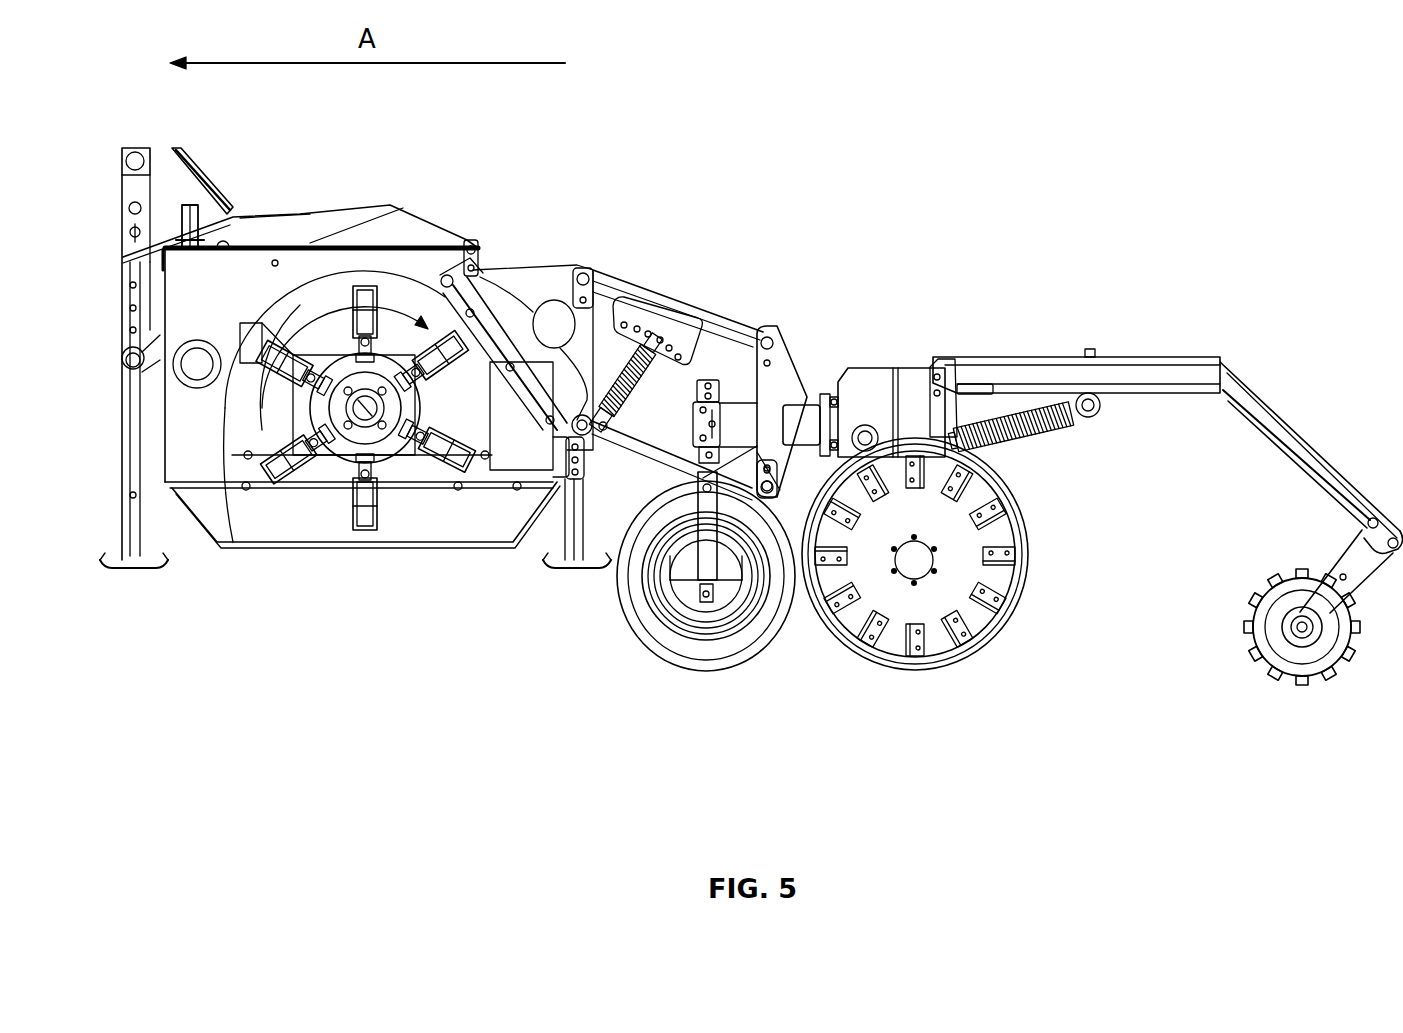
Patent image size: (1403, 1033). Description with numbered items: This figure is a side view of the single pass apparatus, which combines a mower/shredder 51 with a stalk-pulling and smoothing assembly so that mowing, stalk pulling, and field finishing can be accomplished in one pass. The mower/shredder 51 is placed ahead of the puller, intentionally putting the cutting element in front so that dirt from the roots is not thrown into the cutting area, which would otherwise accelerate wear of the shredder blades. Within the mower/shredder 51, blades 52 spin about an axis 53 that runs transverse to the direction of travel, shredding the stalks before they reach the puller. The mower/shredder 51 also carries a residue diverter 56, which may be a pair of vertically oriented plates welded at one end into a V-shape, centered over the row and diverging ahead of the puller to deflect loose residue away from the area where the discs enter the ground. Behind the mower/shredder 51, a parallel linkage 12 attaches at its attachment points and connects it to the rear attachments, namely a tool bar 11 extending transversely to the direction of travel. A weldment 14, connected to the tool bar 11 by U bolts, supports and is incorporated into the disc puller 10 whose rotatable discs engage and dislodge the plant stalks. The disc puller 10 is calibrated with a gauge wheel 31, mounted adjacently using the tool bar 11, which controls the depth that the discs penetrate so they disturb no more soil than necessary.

The disc puller 10 is at (1048, 548).
The tool bar 11 is at (807, 413).
The parallel linkage 12 is at (727, 328).
The weldment 14 is at (880, 345).
The gauge wheel 31 is at (630, 624).
The mower/shredder 51 is at (355, 393).
The blades 52 is at (382, 512).
The axis 53 is at (365, 420).
The residue diverter 56 is at (512, 450).